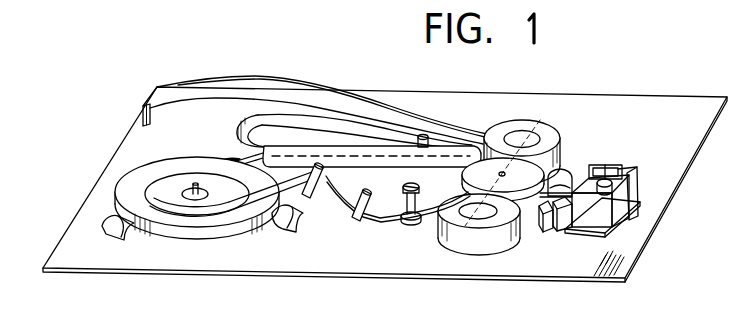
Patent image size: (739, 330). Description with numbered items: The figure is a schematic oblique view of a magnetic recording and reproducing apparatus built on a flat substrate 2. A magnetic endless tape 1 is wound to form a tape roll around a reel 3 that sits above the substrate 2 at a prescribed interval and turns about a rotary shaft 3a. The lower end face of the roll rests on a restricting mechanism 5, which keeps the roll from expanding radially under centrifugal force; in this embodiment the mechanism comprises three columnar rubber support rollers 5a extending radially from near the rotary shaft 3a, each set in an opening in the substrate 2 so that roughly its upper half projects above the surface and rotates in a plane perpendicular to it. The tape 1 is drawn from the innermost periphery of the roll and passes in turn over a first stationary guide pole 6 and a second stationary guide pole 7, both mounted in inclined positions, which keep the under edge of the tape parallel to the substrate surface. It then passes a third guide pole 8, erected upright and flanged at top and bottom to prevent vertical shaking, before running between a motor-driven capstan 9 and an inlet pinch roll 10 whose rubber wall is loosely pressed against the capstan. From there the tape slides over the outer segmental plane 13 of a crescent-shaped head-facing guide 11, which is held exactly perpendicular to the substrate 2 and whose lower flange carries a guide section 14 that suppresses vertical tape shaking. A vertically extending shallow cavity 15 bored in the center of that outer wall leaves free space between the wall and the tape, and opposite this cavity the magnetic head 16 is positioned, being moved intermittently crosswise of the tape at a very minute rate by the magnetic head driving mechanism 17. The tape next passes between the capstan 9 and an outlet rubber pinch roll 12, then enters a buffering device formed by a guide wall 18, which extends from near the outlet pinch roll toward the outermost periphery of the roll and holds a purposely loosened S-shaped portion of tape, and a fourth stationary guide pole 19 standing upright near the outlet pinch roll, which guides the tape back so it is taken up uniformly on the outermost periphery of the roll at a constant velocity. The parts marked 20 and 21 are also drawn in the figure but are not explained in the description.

The tape loop 1 is at (306, 115).
The base plate 2 is at (330, 270).
The turntable disc 3 is at (190, 208).
The hub 3a is at (195, 186).
The holder 5 is at (263, 250).
The retaining tabs 5a is at (118, 233).
The guide pin 6 is at (318, 194).
The guide pin 7 is at (357, 220).
The screw 8 is at (408, 221).
The drive pulley 9 is at (468, 178).
The lower pulley 10 is at (470, 262).
The bearing block 11 is at (568, 174).
The upper pulley 12 is at (546, 133).
The block 13 is at (539, 220).
The block 14 is at (558, 222).
The connector body 15 is at (586, 180).
The base of connector 16 is at (584, 232).
The bracket 17 is at (630, 181).
The band 18 is at (239, 108).
The pin 19 is at (428, 132).
The band end 20 is at (173, 100).
The guide housing 21 is at (383, 167).